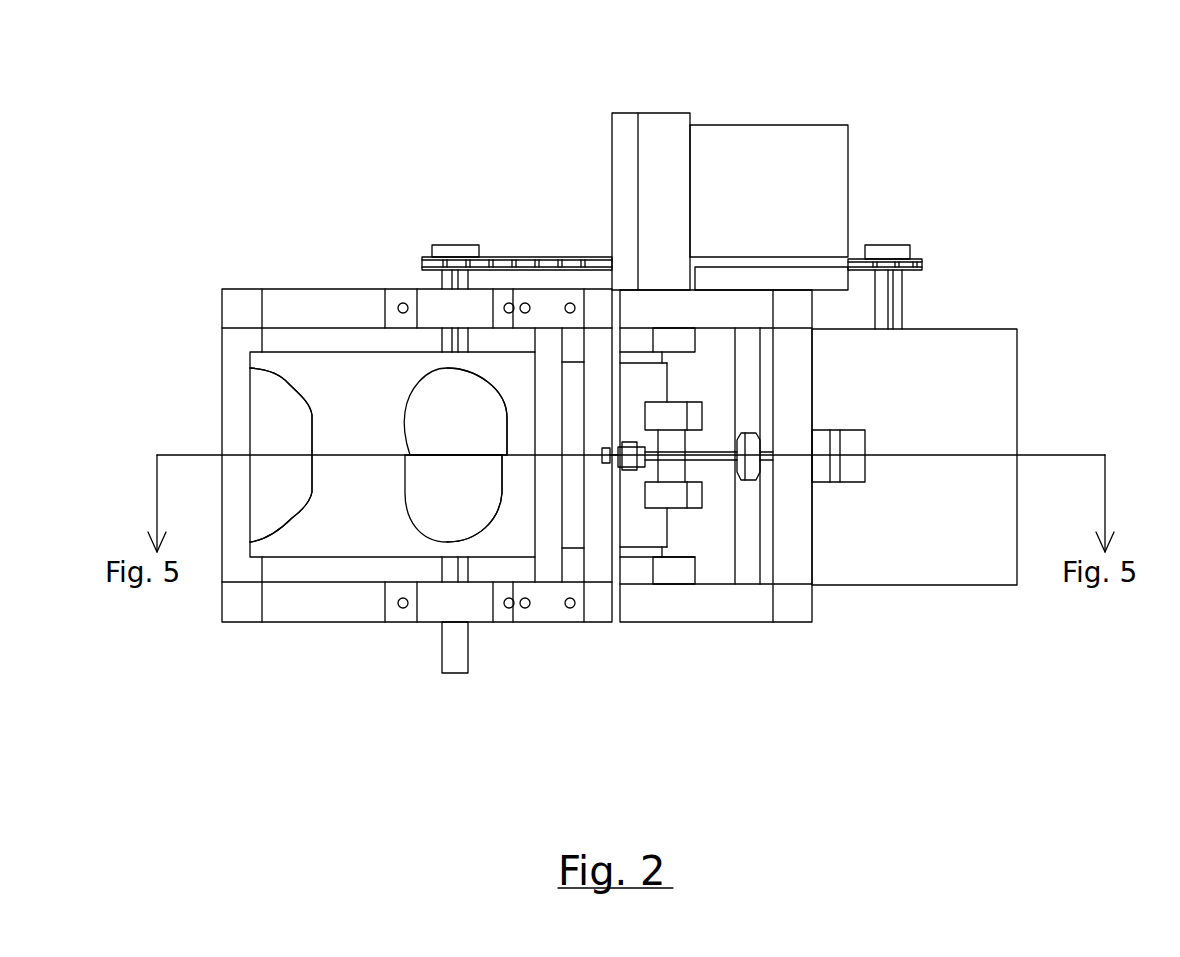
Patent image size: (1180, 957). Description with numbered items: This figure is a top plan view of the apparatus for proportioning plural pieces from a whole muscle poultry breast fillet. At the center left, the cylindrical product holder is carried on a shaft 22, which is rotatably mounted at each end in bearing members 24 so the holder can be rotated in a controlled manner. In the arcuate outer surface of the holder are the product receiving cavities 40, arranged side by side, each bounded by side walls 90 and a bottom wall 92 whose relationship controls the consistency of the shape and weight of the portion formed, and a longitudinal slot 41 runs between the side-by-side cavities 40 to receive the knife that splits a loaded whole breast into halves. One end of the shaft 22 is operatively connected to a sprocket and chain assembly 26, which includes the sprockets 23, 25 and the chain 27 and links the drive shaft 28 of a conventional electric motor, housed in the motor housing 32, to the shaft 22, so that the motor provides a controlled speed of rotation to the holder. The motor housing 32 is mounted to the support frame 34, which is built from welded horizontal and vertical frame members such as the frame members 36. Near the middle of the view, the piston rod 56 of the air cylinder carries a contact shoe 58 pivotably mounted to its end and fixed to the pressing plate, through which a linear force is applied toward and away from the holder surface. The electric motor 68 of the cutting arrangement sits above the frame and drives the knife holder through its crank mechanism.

The shaft 22 is at (470, 650).
The sprocket 23 is at (890, 245).
The bearing member 24 is at (428, 289).
The sprocket 25 is at (452, 245).
The sprocket and chain assembly 26 is at (558, 242).
The chain 27 is at (923, 263).
The drive shaft 28 is at (902, 305).
The motor housing 32 is at (1017, 405).
The support frame 34 is at (760, 657).
The frame member 36 is at (302, 289).
The product receiving cavity 40 is at (297, 387).
The longitudinal slot 41 is at (278, 460).
The piston rod 56 is at (692, 437).
The contact shoe 58 is at (693, 515).
The electric motor 68 is at (762, 110).
The side wall 90 is at (445, 370).
The bottom wall 92 is at (500, 446).